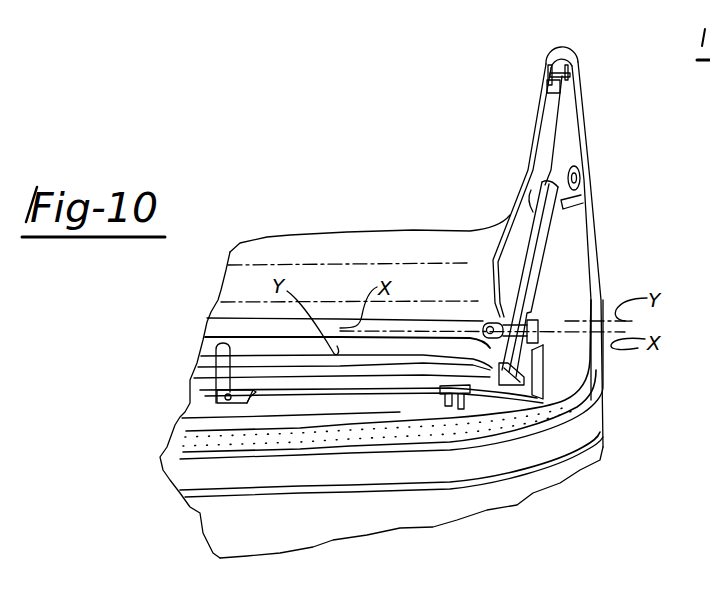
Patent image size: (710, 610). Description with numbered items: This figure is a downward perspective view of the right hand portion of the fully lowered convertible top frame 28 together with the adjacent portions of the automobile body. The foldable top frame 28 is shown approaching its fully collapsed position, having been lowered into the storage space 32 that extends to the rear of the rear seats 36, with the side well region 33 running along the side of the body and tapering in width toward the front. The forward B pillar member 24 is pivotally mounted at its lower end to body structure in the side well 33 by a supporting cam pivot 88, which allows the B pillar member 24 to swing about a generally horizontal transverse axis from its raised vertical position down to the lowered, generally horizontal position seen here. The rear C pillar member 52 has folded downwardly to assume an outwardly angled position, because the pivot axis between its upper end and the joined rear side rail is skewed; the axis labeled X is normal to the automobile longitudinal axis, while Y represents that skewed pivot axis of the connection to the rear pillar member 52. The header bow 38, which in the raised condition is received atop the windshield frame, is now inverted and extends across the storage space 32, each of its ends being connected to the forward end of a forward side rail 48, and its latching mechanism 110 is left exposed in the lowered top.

The forward B pillar member 24 is at (572, 95).
The convertible foldable top frame 28 is at (562, 307).
The storage space 32 is at (240, 453).
The side well region 33 is at (583, 116).
The rear seat 36 is at (346, 262).
The header bow 38 is at (548, 369).
The forward side rail 48 is at (538, 236).
The rear C pillar member 52 is at (562, 243).
The supporting cam pivot 88 is at (559, 50).
The latching mechanism 110 is at (203, 395).